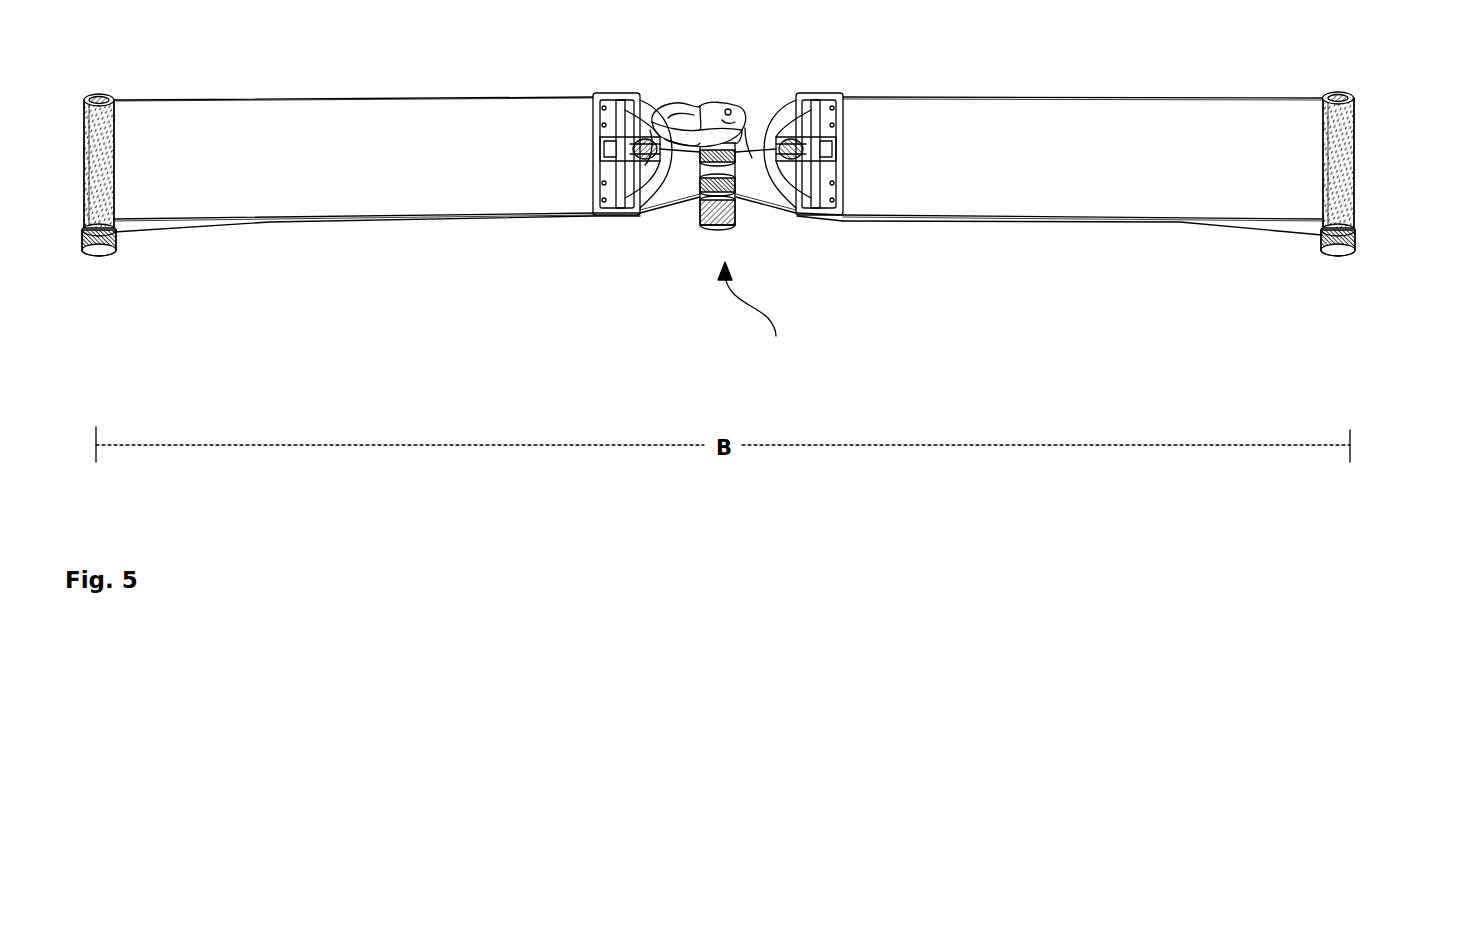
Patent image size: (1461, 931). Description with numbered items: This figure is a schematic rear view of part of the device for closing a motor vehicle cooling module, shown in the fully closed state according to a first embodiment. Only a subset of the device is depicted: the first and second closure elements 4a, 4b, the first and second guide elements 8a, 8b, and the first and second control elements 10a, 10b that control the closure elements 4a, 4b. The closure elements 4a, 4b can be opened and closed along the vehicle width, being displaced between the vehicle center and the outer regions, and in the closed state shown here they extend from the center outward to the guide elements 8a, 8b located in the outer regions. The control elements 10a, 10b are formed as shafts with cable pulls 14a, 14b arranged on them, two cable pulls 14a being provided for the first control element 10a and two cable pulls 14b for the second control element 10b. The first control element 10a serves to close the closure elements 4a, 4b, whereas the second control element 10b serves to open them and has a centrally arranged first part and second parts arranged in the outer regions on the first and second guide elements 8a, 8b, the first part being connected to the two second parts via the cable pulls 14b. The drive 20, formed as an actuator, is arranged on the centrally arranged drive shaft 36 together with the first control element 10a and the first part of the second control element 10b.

The first closure element 4a is at (298, 195).
The second closure element 4b is at (1218, 112).
The first guide element 8a is at (104, 123).
The second guide element 8b is at (1338, 134).
The first control element 10a is at (740, 128).
The second control element 10b is at (100, 250).
The cable pulls of first control element 14a is at (652, 119).
The cable pulls of second control element 14b is at (665, 202).
The drive 20 is at (700, 112).
The drive shaft 36 is at (760, 320).